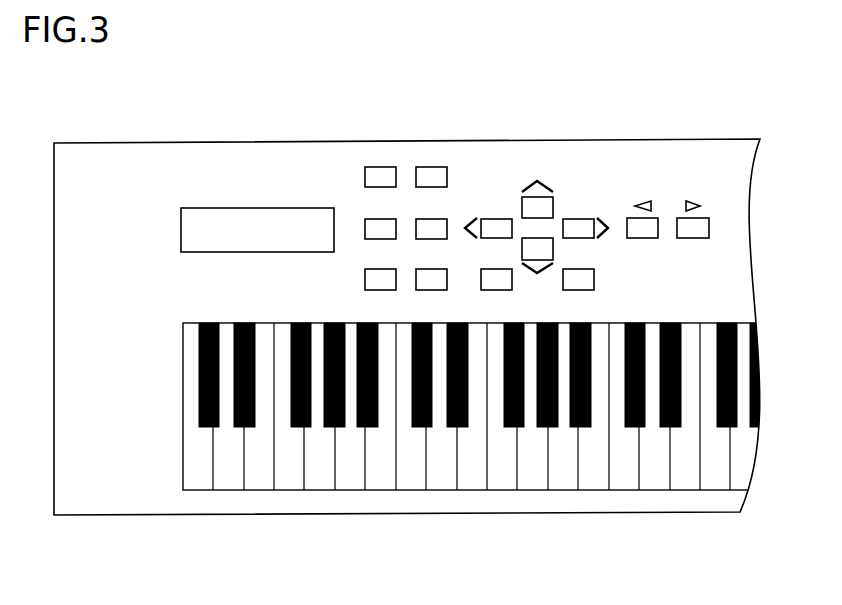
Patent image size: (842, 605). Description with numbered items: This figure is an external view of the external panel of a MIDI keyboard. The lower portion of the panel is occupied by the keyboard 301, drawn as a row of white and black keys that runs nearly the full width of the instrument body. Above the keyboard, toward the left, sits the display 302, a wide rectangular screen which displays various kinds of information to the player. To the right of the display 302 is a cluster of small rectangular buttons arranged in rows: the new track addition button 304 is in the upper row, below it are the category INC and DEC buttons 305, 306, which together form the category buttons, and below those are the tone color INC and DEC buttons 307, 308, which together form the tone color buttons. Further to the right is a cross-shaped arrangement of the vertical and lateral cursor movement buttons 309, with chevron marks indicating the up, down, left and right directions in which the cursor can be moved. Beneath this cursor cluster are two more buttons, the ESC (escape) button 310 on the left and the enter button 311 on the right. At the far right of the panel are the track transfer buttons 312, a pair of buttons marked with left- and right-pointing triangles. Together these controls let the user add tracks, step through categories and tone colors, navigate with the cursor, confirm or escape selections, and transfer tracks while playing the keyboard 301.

The keyboard 301 is at (398, 500).
The display 302 is at (238, 208).
The new track addition button 304 is at (435, 167).
The category INC button 305 is at (388, 219).
The category DEC button 306 is at (437, 219).
The tone color INC button 307 is at (388, 269).
The tone color DEC button 308 is at (437, 269).
The vertical and lateral cursor movement buttons 309 is at (563, 205).
The ESC button 310 is at (493, 290).
The enter button 311 is at (576, 290).
The track transfer buttons 312 is at (668, 243).